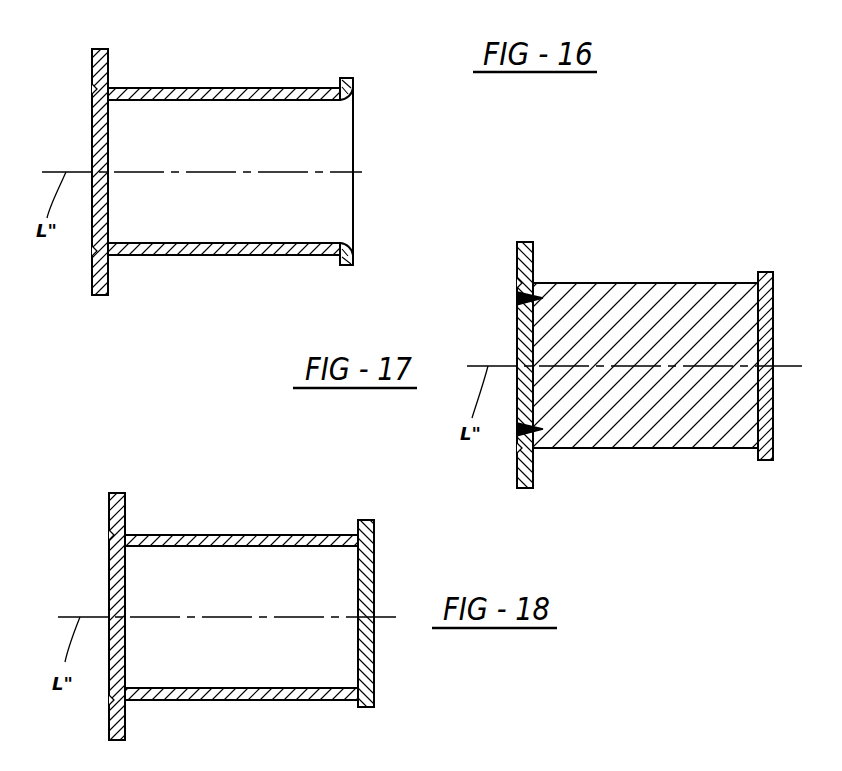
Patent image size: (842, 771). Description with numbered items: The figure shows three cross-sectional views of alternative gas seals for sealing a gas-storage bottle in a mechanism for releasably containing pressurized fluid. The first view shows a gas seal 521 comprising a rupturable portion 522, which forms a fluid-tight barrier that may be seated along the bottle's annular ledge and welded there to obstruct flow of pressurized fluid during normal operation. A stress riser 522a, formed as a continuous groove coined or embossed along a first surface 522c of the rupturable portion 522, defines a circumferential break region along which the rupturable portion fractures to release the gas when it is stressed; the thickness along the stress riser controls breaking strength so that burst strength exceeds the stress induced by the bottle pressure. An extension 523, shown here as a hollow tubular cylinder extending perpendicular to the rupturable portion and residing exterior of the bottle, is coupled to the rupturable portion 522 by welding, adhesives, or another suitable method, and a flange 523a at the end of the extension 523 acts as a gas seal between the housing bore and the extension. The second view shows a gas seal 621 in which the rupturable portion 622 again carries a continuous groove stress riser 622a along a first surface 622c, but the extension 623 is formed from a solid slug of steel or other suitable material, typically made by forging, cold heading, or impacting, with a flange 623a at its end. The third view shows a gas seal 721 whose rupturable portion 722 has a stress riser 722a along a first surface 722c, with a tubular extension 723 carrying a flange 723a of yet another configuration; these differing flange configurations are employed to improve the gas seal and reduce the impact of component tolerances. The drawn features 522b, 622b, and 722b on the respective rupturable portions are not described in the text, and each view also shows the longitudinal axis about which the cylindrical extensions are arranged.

In FIG. 16, the gas seal 521 is at (212, 290).
In FIG. 16, the rupturable portion 522 is at (92, 49).
In FIG. 16, the stress riser 522a is at (92, 251).
In FIG. 16, the flange upper notch 522b is at (92, 89).
In FIG. 16, the first surface 522c is at (92, 148).
In FIG. 16, the extension 523 is at (176, 94).
In FIG. 16, the flange 523a is at (350, 80).
In FIG. 17, the gas seal 621 is at (658, 504).
In FIG. 17, the rupturable portion 622 is at (517, 243).
In FIG. 17, the stress riser 622a is at (517, 281).
In FIG. 17, the flange weld arrow region 622b is at (517, 289).
In FIG. 17, the first surface 622c is at (517, 345).
In FIG. 17, the extension 623 is at (600, 290).
In FIG. 17, the flange 623a is at (773, 283).
In FIG. 18, the gas seal 721 is at (274, 750).
In FIG. 18, the rupturable portion 722 is at (109, 494).
In FIG. 18, the stress riser 722a is at (109, 533).
In FIG. 18, the flange inner notch 722b is at (109, 540).
In FIG. 18, the first surface 722c is at (109, 594).
In FIG. 18, the extension 723 is at (192, 540).
In FIG. 18, the flange 723a is at (365, 520).